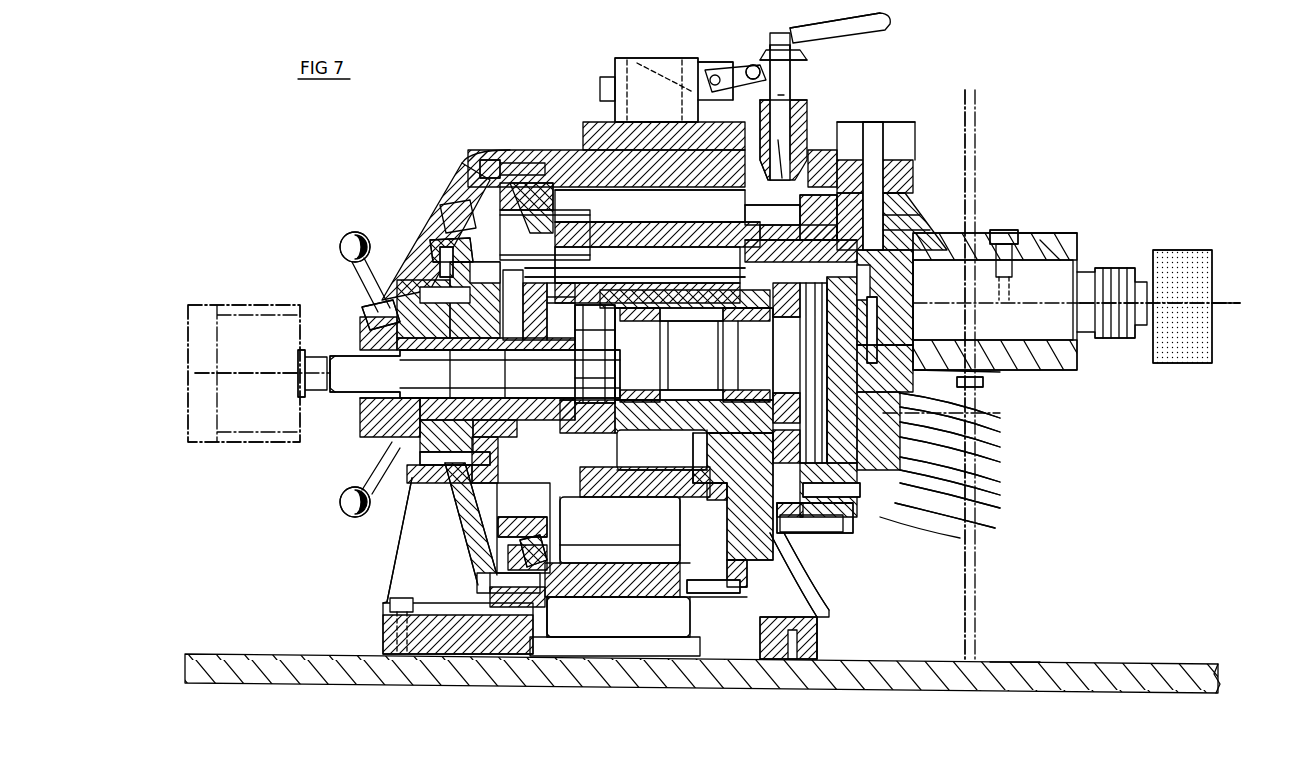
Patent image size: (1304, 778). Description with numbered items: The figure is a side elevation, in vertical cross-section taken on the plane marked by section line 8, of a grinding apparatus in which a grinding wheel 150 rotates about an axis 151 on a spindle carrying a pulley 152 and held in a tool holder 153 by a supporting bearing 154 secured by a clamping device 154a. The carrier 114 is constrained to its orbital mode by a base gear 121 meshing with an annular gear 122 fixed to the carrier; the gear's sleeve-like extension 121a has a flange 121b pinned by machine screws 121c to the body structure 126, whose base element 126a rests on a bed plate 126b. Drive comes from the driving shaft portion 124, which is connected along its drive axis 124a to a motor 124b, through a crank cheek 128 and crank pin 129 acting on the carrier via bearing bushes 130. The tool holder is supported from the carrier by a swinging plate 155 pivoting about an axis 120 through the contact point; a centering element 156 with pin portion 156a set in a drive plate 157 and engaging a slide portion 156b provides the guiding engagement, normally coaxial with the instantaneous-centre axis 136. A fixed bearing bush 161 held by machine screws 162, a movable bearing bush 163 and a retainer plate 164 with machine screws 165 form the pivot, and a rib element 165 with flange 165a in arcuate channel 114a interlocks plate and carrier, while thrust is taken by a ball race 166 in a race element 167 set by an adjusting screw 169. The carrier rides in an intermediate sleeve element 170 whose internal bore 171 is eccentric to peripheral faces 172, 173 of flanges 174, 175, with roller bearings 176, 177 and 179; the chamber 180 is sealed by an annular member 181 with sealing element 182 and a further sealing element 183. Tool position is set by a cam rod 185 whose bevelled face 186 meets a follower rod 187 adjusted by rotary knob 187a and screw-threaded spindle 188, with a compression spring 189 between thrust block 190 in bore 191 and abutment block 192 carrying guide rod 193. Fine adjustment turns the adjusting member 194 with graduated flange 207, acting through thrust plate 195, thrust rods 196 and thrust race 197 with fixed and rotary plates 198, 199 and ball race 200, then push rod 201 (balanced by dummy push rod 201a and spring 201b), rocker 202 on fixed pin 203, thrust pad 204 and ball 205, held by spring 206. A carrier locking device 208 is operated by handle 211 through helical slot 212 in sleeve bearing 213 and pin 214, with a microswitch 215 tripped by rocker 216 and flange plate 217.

The section line 8— 8 is at (906, 160).
The carrier 114 is at (700, 430).
The arcuate channel 114a is at (792, 548).
The axis 120 is at (1117, 253).
The base gear 121 is at (475, 374).
The sleeve-like extension 121a is at (453, 393).
The flange 121b is at (372, 431).
The machine screws 121c is at (370, 311).
The internally toothed annular gear 122 is at (570, 404).
The driving shaft portion 124 is at (353, 379).
The coupling axis 124a is at (268, 376).
The motor 124b is at (252, 320).
The body structure 126 is at (433, 540).
The base element 126a is at (806, 632).
The bed plate 126b is at (1063, 645).
The crank cheek 128 is at (590, 336).
The crank pin 129 is at (691, 355).
The bearing bushes 130 is at (642, 394).
The axis 136 is at (978, 430).
The grinding wheel 150 is at (1186, 258).
The axis 151 is at (1215, 303).
The pulley 152 is at (1101, 272).
The tool holder 153 is at (1052, 245).
The supporting bearing 154 is at (995, 301).
The clamping device 154a is at (1034, 232).
The swinging plate 155 is at (970, 519).
The centering element 156 is at (992, 414).
The pin portion 156a is at (978, 466).
The slide portion 156b is at (975, 503).
The drive plate 157 is at (977, 483).
The fixed bearing bush 161 is at (823, 192).
The machine screws 162 is at (810, 176).
The movable bearing bush 163 is at (902, 292).
The retainer plate 164 is at (905, 183).
The machine screws / rib element 165 is at (905, 200).
The flange 165a is at (835, 522).
The ball race 166 is at (793, 472).
The race element 167 is at (853, 517).
The adjusting screw 169 is at (963, 537).
The intermediate sleeve element 170 is at (662, 562).
The internal bore 171 is at (650, 470).
The peripheral face 172 is at (549, 519).
The peripheral face 173 is at (742, 561).
The flange 174 is at (466, 527).
The flange 175 is at (568, 617).
The roller bearing 176 is at (549, 546).
The roller bearing 177 is at (618, 617).
The roller bearing 179 is at (703, 465).
The chamber 180 is at (620, 537).
The annular member 181 is at (742, 582).
The sealing element 182 is at (740, 596).
The sealing element 183 is at (805, 560).
The cam rod 185 is at (916, 275).
The bevelled face 186 is at (1005, 231).
The follower rod 187 is at (905, 222).
The rotary knob 187a is at (906, 124).
The screw-threaded spindle 188 is at (873, 160).
The coiled compression spring 189 is at (1022, 376).
The adjustable thrust block 190 is at (970, 447).
The bore 191 is at (1000, 399).
The abutment block 192 is at (880, 302).
The guide rod 193 is at (916, 330).
The adjusting member 194 is at (362, 467).
The thrust plate 195 is at (358, 478).
The thrust rods 196 is at (480, 484).
The thrust race 197 is at (467, 517).
The fixed plate 198 is at (440, 252).
The rotary plate 199 is at (433, 258).
The ball race 200 is at (467, 257).
The push rod 201 is at (601, 264).
The dummy push rod 201a is at (584, 529).
The spring 201b is at (646, 529).
The rocker 202 is at (730, 237).
The fixed pin 203 is at (740, 228).
The thrust pad 204 is at (635, 261).
The ball 205 is at (762, 140).
The coiled compression spring 206 is at (826, 200).
The flange 207 is at (360, 284).
The carrier locking device 208 is at (846, 77).
The handle 211 is at (886, 26).
The helical slot 212 is at (792, 80).
The sleeve bearing 213 is at (795, 62).
The radially projecting pin 214 is at (796, 97).
The microswitch 215 is at (660, 57).
The rocker 216 is at (722, 62).
The flange plate 217 is at (762, 64).